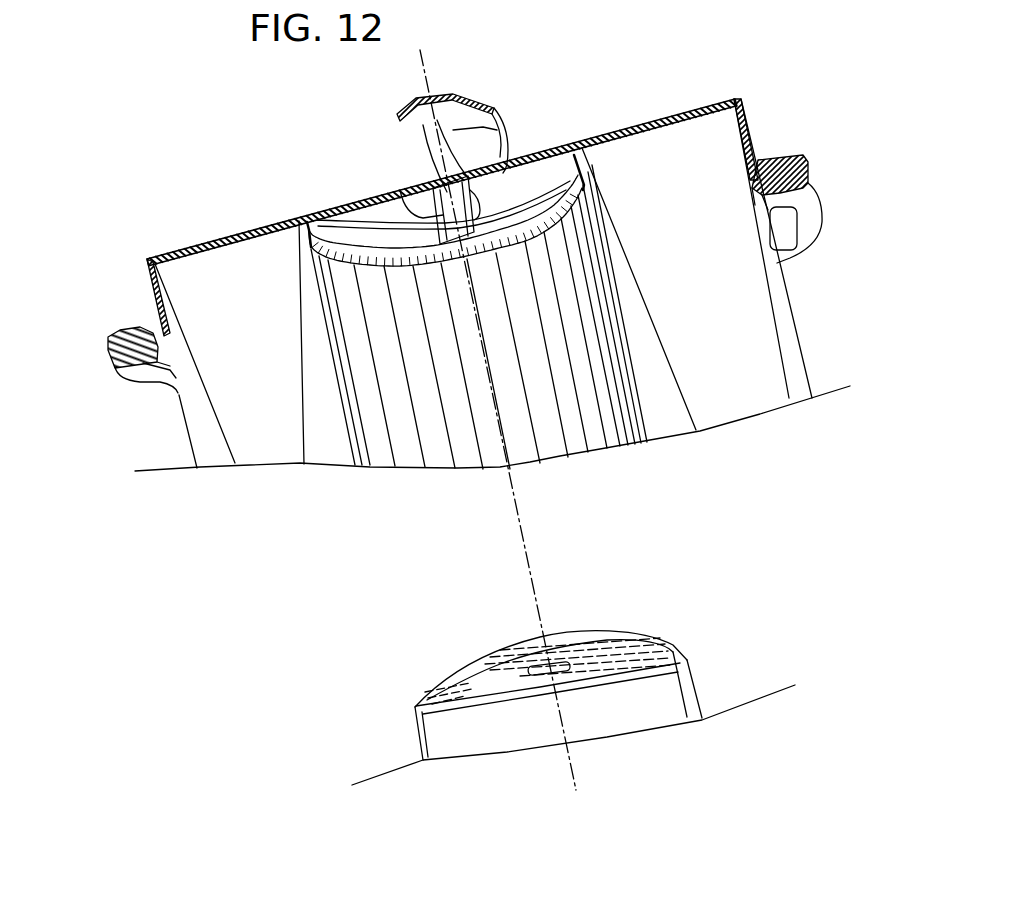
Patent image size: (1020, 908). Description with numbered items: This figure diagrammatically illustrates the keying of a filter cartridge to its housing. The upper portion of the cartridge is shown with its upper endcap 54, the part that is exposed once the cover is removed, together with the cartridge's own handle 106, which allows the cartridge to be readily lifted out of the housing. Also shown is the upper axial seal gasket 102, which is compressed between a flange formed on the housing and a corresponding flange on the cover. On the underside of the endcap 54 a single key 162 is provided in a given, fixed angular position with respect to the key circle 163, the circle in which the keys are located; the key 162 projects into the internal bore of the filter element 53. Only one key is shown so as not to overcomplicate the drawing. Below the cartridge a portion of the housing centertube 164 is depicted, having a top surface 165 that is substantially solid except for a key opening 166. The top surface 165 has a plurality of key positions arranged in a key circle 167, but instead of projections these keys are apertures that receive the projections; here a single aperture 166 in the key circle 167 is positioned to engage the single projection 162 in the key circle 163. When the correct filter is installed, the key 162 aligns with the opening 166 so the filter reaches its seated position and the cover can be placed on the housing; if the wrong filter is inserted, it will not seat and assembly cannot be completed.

The filter element 53 is at (768, 330).
The upper endcap 54 is at (638, 122).
The upper axial seal gasket 102 is at (813, 162).
The handle 106 is at (438, 95).
The key 162 is at (388, 203).
The key circle 163 is at (527, 177).
The housing centertube 164 is at (693, 683).
The top surface 165 is at (633, 657).
The key opening 166 is at (560, 666).
The key circle 167 is at (449, 687).